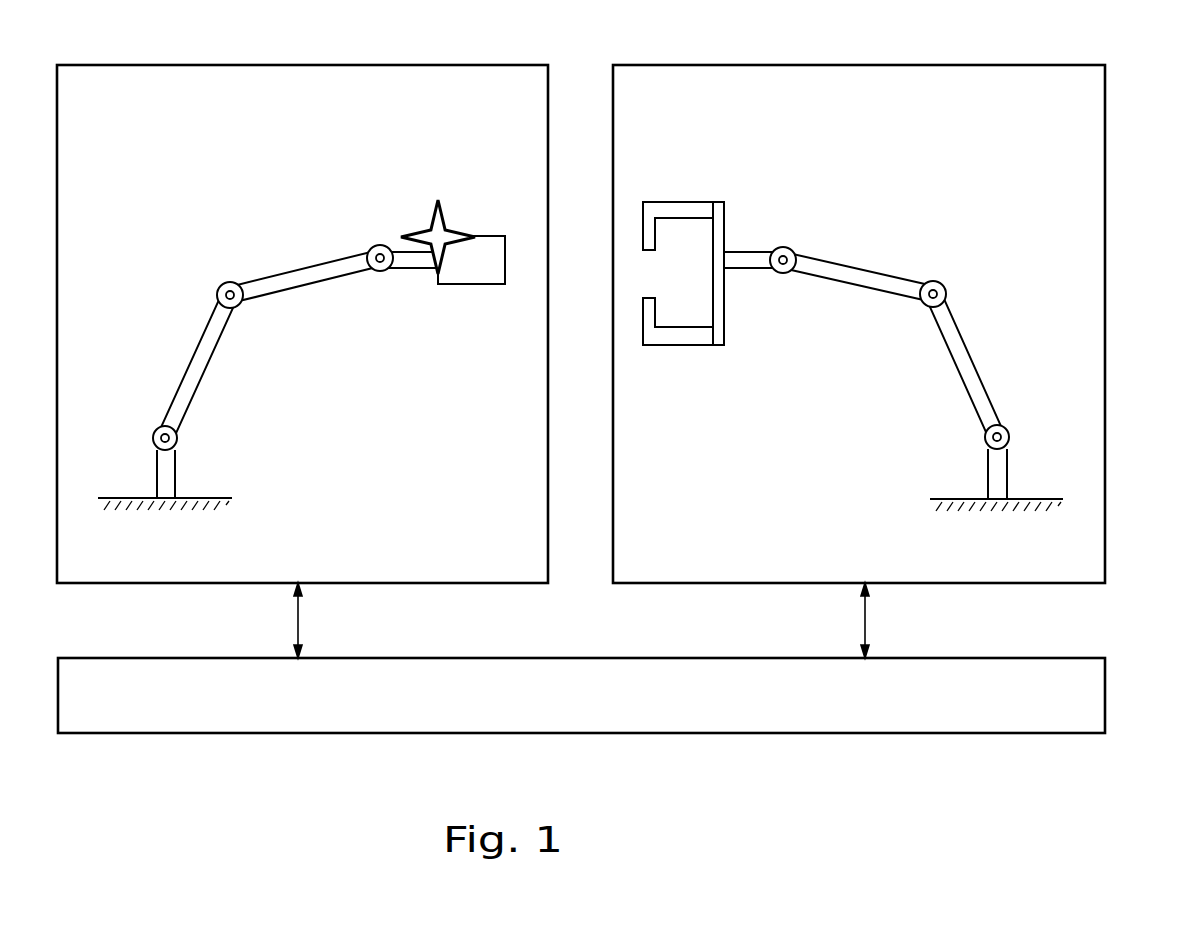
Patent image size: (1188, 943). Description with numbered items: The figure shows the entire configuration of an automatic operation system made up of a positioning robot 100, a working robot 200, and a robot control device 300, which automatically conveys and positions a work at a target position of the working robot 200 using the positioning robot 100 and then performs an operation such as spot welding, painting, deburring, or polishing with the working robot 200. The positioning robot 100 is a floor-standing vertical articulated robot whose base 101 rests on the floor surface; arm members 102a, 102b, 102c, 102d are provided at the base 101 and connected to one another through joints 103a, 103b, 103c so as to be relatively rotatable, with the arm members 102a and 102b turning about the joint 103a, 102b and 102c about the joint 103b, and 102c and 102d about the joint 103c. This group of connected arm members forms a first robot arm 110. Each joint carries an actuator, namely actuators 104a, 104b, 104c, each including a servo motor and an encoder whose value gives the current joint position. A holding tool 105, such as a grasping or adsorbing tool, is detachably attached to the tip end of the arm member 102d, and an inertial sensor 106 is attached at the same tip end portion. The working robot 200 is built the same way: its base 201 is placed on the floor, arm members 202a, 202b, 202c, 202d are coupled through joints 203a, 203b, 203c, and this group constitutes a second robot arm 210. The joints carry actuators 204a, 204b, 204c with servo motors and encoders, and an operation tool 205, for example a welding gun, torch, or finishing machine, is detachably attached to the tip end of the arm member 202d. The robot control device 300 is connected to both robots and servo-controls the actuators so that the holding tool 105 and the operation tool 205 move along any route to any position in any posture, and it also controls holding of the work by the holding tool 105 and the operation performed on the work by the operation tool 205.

The positioning robot 100 is at (435, 64).
The robot arm 110 is at (198, 212).
The base 101 is at (187, 498).
The arm member 102a is at (157, 468).
The arm member 102b is at (200, 343).
The arm member 102c is at (300, 268).
The arm member 102d is at (408, 252).
The joint 103a is at (153, 435).
The joint 103b is at (217, 287).
The joint 103c is at (373, 252).
The actuator 104a is at (177, 438).
The actuator 104b is at (233, 300).
The actuator 104c is at (380, 268).
The holding tool 105 is at (492, 235).
The inertial sensor 106 is at (443, 220).
The working robot 200 is at (992, 64).
The robot arm 210 is at (965, 220).
The base 201 is at (977, 498).
The arm member 202a is at (1007, 467).
The arm member 202b is at (967, 340).
The arm member 202c is at (863, 267).
The arm member 202d is at (745, 250).
The joint 203a is at (1010, 435).
The joint 203b is at (943, 282).
The joint 203c is at (790, 247).
The actuator 204a is at (987, 440).
The actuator 204b is at (928, 303).
The actuator 204c is at (780, 270).
The operation tool 205 is at (683, 202).
The robot control device 300 is at (1105, 682).